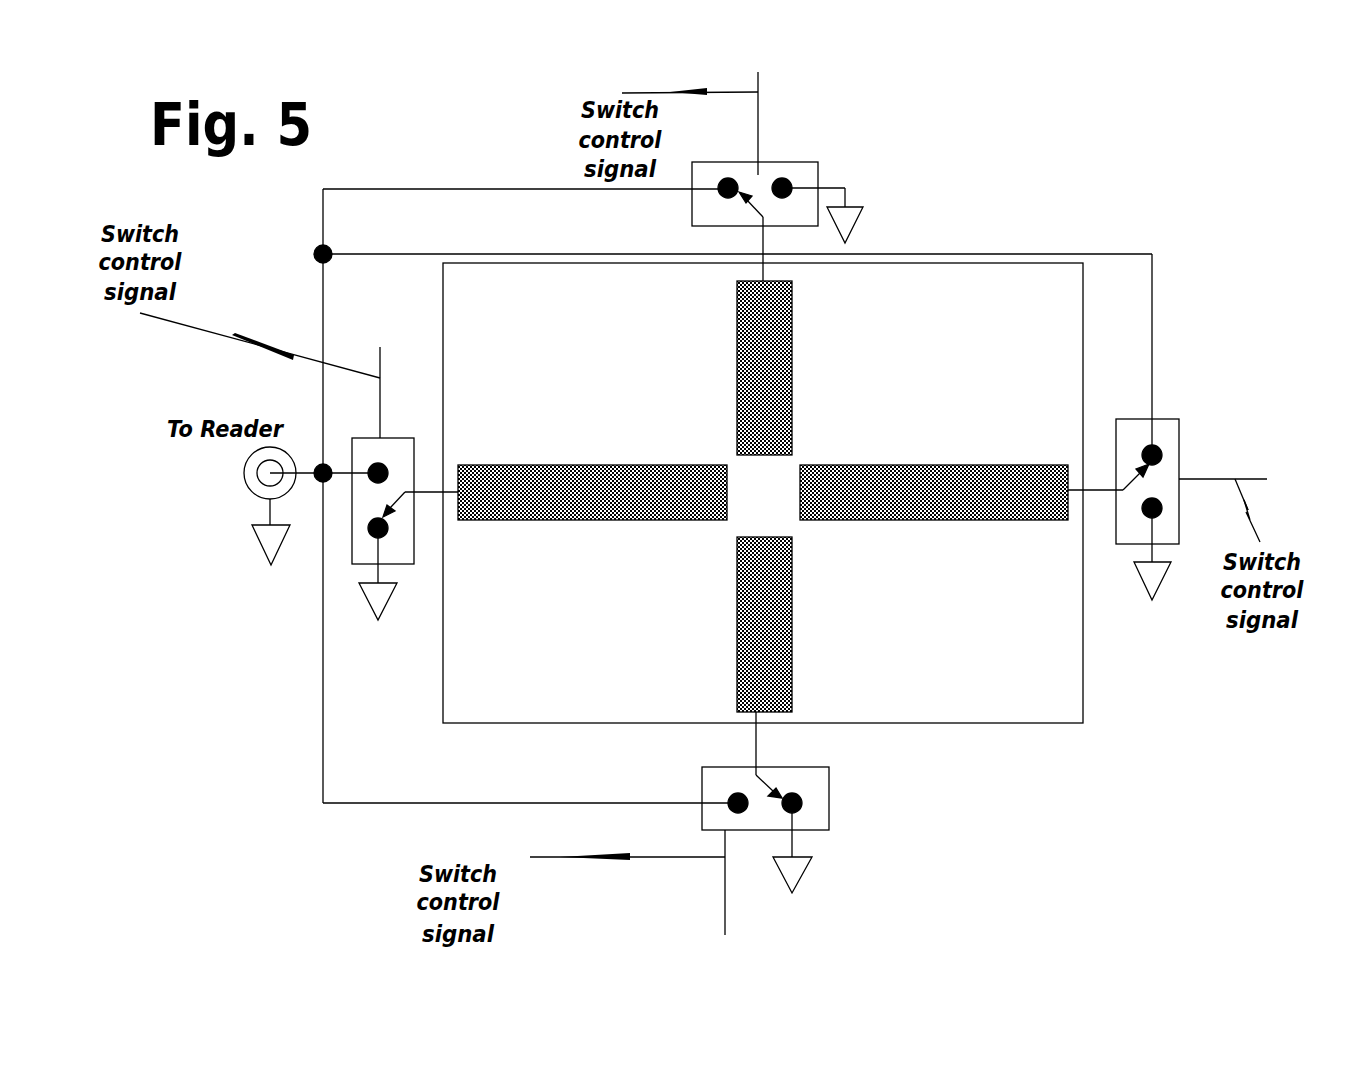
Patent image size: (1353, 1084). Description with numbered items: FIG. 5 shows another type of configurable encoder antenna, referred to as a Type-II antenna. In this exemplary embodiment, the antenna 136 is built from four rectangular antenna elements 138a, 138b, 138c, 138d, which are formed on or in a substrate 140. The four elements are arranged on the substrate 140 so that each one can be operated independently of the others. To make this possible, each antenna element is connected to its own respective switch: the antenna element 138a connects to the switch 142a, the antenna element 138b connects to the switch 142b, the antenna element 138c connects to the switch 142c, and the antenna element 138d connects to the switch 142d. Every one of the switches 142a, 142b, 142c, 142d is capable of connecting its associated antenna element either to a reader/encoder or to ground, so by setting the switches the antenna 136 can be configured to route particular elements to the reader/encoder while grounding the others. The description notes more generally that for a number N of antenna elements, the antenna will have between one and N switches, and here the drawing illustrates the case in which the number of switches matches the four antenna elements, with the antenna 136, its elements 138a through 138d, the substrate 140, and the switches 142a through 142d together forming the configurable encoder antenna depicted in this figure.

The antenna 136 is at (1006, 171).
The antenna element 138a is at (592, 492).
The antenna element 138b is at (934, 492).
The antenna element 138c is at (790, 368).
The antenna element 138d is at (790, 624).
The substrate 140 is at (763, 493).
The switch 142a is at (358, 485).
The switch 142b is at (1167, 487).
The switch 142c is at (782, 176).
The switch 142d is at (789, 823).